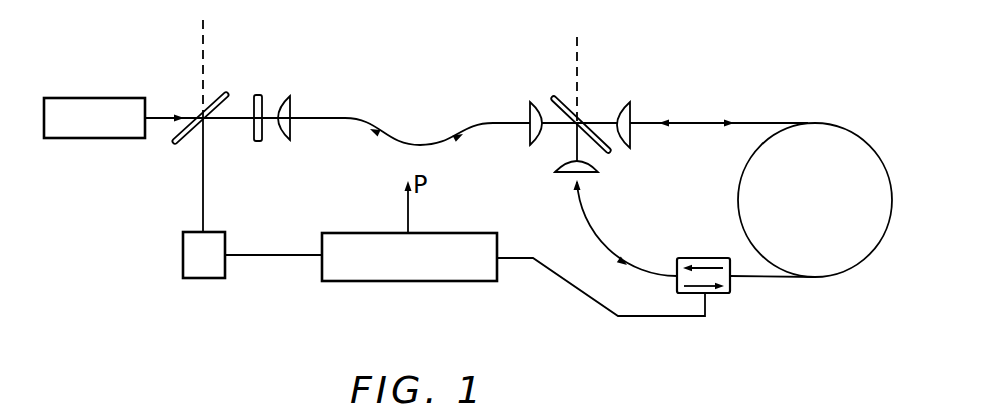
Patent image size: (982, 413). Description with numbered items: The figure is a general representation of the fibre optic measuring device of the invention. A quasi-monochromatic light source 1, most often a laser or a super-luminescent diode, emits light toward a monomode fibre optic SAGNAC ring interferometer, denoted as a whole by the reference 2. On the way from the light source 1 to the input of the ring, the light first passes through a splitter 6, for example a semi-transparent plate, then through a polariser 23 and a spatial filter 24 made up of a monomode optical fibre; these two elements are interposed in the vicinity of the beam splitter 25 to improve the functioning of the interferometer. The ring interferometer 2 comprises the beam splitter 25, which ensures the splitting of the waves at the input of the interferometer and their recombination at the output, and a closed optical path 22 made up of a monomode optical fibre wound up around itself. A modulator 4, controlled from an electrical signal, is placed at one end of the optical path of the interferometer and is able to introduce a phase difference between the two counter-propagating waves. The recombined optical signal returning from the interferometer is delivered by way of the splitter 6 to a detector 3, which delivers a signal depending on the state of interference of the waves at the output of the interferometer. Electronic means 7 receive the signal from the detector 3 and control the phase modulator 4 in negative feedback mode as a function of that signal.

The quasi-monochromatic light source 1 is at (97, 138).
The monomode fibre optic SAGNAC ring interferometer 2 is at (745, 108).
The detector 3 is at (214, 268).
The modulator 4 is at (720, 295).
The splitter 6 is at (197, 135).
The electronic means 7 is at (458, 247).
The closed optical path 22 is at (750, 162).
The polariser 23 is at (266, 103).
The spatial filter 24 is at (347, 118).
The beam splitter 25 is at (590, 127).